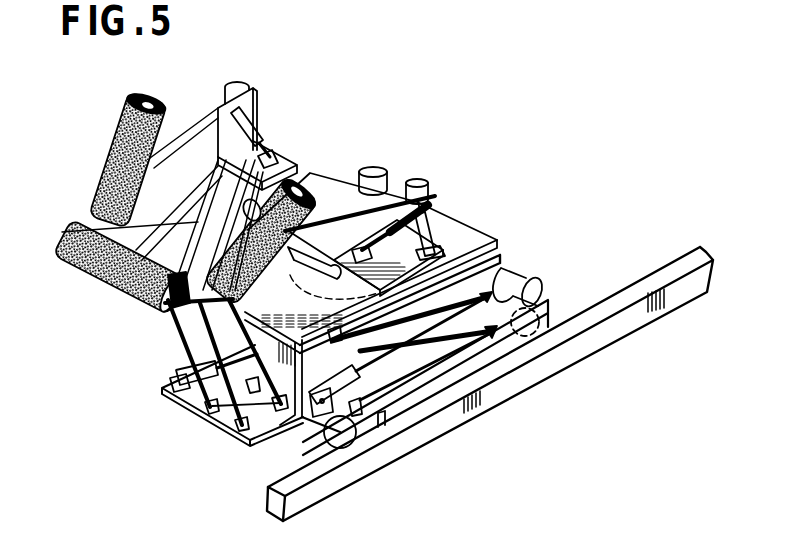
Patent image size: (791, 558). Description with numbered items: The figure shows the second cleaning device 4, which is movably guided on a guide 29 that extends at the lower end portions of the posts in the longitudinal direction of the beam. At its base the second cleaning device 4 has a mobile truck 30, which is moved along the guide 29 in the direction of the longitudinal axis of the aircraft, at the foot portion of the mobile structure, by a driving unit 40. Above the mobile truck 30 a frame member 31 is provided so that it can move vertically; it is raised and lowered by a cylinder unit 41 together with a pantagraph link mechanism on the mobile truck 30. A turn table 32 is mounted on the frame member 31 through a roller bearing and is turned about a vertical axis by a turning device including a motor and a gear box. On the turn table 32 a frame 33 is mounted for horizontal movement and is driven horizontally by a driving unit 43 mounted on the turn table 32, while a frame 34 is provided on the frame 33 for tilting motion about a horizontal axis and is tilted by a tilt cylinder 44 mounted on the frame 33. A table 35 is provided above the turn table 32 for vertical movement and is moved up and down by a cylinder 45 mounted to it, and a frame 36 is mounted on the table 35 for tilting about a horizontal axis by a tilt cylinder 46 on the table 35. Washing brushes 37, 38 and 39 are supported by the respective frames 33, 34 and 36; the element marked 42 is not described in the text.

The second cleaning device 4 is at (298, 86).
The guide 29 is at (600, 340).
The mobile truck 30 is at (440, 360).
The frame member 31 is at (500, 248).
The turn table 32 is at (496, 232).
The frame 33 is at (383, 166).
The frame 34 is at (433, 206).
The table 35 is at (316, 178).
The frame 36 is at (258, 118).
The washing brush 37 is at (120, 287).
The washing brush 38 is at (197, 317).
The washing brush 39 is at (158, 126).
The driving unit 40 is at (531, 279).
The cylinder unit 41 is at (307, 418).
The pivot post 42 is at (421, 176).
The driving unit 43 is at (297, 268).
The tilt cylinder 44 is at (468, 238).
The cylinder 45 is at (182, 367).
The tilt cylinder 46 is at (268, 128).